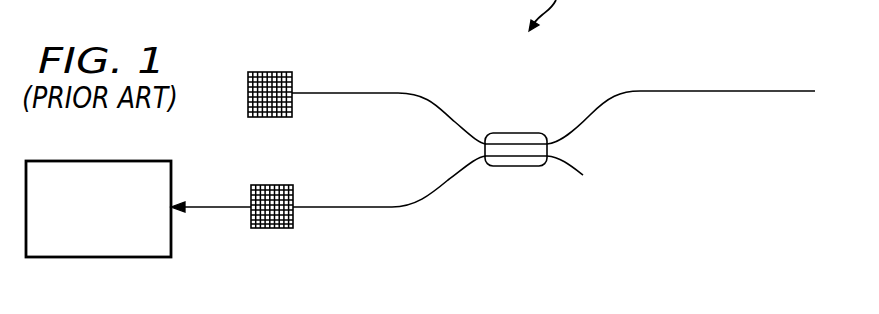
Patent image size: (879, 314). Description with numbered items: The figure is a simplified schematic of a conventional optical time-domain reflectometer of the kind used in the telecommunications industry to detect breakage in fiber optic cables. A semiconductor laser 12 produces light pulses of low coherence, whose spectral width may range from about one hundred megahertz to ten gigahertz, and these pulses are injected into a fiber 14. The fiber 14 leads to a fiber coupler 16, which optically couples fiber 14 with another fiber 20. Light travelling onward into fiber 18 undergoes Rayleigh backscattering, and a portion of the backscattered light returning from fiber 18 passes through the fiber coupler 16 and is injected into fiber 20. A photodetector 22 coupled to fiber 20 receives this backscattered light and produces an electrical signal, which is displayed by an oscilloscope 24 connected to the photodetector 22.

The semiconductor laser 12 is at (267, 72).
The fiber 14 is at (384, 92).
The fiber coupler 16 is at (514, 133).
The fiber 18 is at (775, 90).
The fiber 20 is at (384, 209).
The photodetector 22 is at (268, 230).
The oscilloscope 24 is at (112, 233).